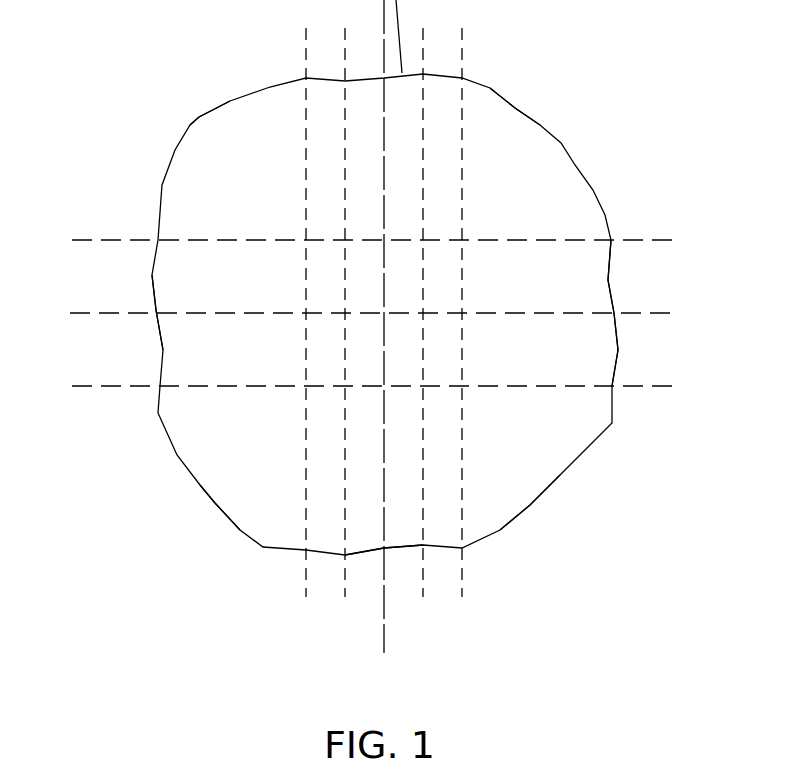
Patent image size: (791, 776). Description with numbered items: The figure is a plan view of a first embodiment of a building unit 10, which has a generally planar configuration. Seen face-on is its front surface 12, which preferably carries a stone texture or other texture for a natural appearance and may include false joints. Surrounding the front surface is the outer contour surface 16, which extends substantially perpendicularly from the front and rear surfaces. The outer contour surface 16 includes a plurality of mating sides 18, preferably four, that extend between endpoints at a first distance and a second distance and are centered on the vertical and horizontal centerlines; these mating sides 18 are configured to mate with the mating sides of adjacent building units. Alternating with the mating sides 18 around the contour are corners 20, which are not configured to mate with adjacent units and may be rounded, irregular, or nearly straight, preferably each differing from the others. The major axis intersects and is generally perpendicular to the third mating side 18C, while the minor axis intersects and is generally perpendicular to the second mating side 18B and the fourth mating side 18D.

The building unit 10 is at (102, 98).
The front surface 12 is at (518, 195).
The outer contour surface 16 is at (561, 143).
The mating sides 18 is at (609, 268).
The second mating side 18B is at (619, 355).
The third mating side 18C is at (402, 549).
The fourth mating side 18D is at (158, 355).
The corners 20 is at (199, 116).